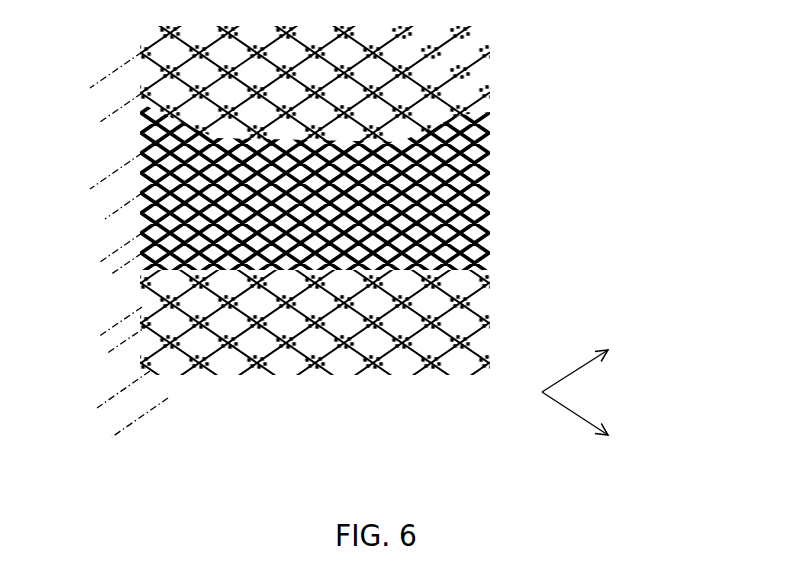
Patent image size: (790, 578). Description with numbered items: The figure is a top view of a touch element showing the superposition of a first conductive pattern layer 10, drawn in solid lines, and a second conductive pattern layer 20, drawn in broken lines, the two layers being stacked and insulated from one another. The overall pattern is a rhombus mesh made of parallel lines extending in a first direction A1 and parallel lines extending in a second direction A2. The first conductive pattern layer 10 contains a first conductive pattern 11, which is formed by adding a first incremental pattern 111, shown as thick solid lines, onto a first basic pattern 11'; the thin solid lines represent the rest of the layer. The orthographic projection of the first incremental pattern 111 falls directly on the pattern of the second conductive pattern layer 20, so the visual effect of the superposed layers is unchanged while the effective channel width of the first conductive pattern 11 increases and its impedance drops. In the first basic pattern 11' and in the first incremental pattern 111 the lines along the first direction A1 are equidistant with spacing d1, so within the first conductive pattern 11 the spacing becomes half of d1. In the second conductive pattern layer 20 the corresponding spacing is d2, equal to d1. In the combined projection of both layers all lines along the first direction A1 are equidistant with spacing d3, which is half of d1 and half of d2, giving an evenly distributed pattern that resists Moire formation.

The first conductive pattern layer 10 is at (493, 50).
The second conductive pattern layer 20 is at (493, 75).
The first conductive pattern 11 is at (419, 247).
The first incremental pattern 111 is at (495, 186).
The first basic pattern 11' is at (381, 247).
The first direction A1 is at (602, 360).
The second direction A2 is at (601, 426).
The spacing between adjacent parallel lines of the first conductive pattern layer d1 is at (93, 86).
The spacing between adjacent parallel lines of the second conductive pattern layer d2 is at (106, 401).
The spacing between adjacent parallel lines in the orthographic projection combinati d3 is at (90, 316).